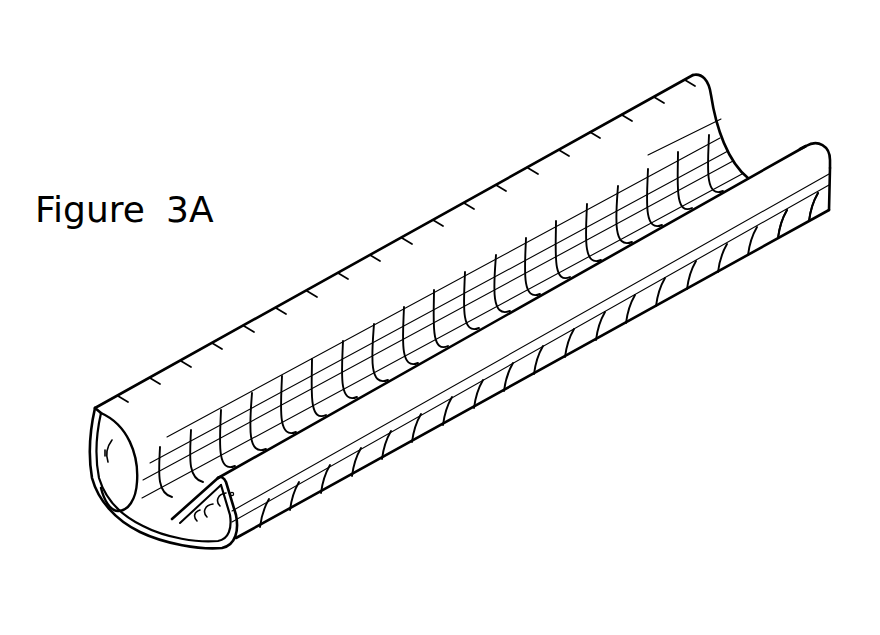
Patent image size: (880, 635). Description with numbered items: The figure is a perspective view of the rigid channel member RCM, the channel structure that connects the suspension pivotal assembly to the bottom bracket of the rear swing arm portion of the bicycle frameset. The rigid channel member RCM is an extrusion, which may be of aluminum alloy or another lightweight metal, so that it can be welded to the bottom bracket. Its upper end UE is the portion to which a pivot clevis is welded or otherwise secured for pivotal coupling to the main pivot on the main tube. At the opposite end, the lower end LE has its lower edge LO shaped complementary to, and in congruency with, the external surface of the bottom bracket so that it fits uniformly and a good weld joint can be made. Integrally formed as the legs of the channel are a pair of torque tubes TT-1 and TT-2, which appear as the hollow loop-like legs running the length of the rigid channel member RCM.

The torque tube TT-1 is at (703, 105).
The torque tube TT-2 is at (833, 155).
The upper end UE is at (790, 218).
The rigid channel member RCM is at (527, 363).
The lower end LE is at (290, 497).
The lower edge LO is at (90, 442).